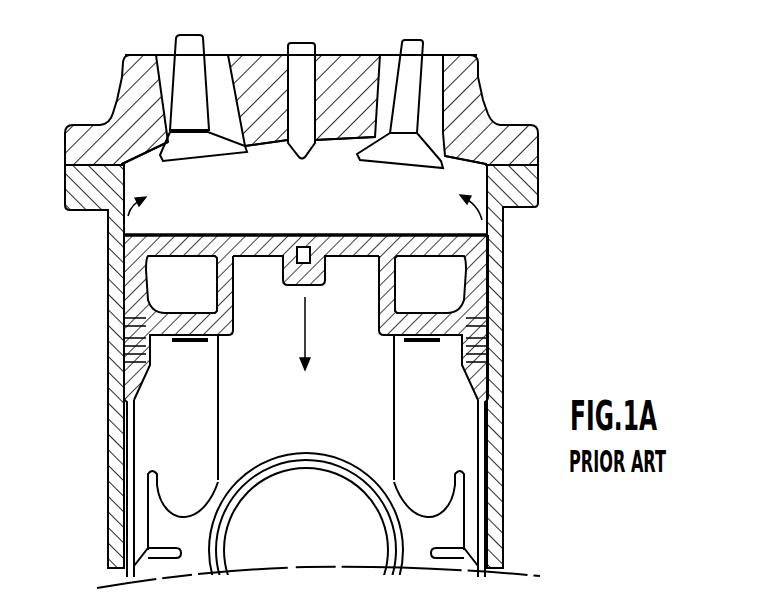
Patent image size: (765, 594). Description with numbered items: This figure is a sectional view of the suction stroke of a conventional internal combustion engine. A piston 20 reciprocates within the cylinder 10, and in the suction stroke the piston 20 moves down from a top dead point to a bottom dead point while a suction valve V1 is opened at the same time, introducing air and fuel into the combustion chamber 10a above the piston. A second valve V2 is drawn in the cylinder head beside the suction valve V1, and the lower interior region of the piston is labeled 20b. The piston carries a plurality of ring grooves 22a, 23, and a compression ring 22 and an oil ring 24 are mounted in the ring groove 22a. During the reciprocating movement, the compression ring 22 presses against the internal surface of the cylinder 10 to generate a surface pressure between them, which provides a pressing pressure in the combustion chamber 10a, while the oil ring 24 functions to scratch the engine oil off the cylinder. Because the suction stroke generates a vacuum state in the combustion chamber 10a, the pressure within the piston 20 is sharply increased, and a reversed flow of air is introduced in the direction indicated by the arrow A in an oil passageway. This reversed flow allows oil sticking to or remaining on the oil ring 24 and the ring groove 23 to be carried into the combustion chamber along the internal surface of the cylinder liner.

The cylinder 10 is at (503, 250).
The combustion chamber 10a is at (320, 204).
The piston 20 is at (307, 414).
The piston interior 20b is at (327, 435).
The compression ring 22 is at (307, 324).
The ring groove 22a is at (124, 318).
The ring groove 23 is at (124, 346).
The oil ring 24 is at (503, 360).
The suction valve V1 is at (410, 66).
The intake valve V2 is at (199, 40).
The arrow A is at (305, 196).